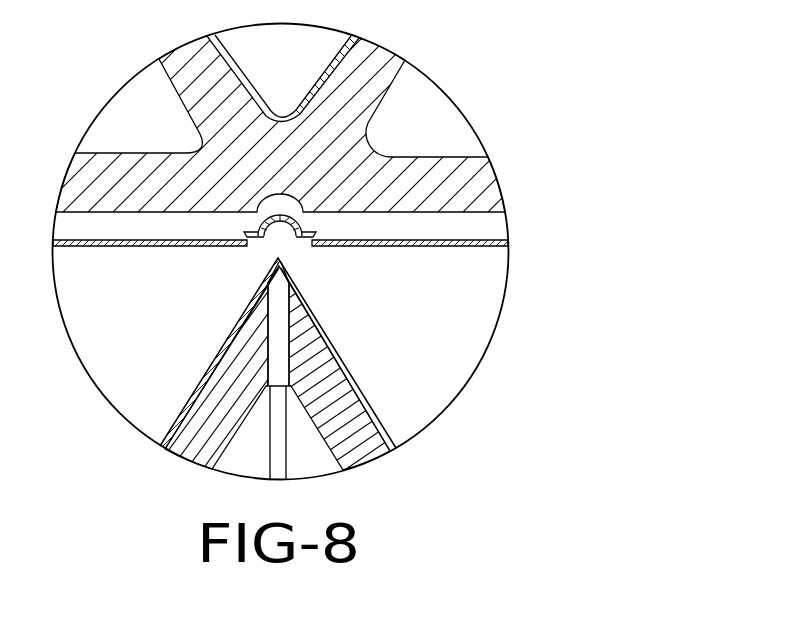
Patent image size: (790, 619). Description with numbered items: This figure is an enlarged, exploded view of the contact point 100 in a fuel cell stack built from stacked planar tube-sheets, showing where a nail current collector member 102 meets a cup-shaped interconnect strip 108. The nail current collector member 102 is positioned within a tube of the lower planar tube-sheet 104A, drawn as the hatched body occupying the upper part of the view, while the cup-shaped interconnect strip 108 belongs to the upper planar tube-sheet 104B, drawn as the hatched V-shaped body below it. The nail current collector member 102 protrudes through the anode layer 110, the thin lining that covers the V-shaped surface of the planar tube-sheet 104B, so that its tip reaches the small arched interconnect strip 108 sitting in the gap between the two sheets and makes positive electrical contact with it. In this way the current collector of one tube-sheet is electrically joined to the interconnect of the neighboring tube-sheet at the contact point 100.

The contact point 100 is at (476, 78).
The nail current collector member 102 is at (285, 453).
The lower planar tube-sheet 104A is at (480, 185).
The upper planar tube-sheet 104B is at (207, 452).
The cup-shaped interconnect strip 108 is at (260, 245).
The anode layer 110 is at (330, 325).